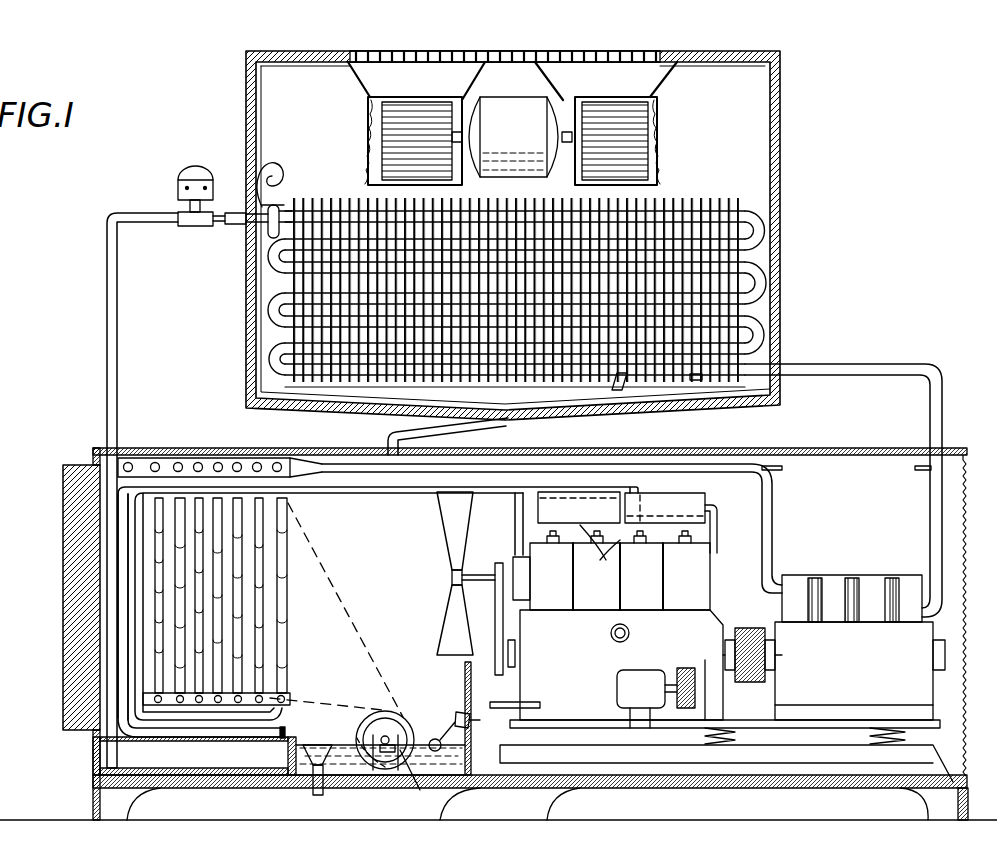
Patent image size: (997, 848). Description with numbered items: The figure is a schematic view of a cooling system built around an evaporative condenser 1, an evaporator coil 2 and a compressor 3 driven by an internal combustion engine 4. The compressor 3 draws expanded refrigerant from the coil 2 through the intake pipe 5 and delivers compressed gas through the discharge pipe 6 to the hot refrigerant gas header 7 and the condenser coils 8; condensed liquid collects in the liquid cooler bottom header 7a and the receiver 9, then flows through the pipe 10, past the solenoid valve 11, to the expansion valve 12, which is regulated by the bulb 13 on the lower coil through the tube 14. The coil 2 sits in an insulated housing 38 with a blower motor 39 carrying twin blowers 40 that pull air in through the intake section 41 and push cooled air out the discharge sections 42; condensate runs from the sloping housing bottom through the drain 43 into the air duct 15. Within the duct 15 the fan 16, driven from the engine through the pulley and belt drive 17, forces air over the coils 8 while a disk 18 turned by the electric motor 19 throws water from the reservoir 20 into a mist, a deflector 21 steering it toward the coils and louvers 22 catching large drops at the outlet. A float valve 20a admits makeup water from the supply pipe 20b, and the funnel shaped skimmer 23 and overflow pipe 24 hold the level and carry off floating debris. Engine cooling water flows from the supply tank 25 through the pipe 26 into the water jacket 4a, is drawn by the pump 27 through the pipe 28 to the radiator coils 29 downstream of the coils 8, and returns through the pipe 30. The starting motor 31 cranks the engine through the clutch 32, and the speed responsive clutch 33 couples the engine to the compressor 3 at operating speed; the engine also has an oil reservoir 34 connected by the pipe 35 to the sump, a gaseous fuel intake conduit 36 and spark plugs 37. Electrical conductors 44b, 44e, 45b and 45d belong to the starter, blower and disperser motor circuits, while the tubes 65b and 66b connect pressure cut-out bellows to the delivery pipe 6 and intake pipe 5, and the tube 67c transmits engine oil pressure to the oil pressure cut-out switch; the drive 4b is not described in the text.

The evaporative condenser 1 is at (300, 430).
The evaporator coil 2 is at (260, 346).
The compressor 3 is at (949, 700).
The internal combustion engine 4 is at (708, 618).
The water jacket 4a is at (655, 585).
The fan belt drive 4b is at (470, 650).
The intake pipe 5 is at (942, 432).
The discharge pipe 6 is at (748, 462).
The hot refrigerant gas header 7 is at (243, 458).
The liquid cooler bottom header 7a is at (143, 732).
The condenser coils 8 is at (283, 600).
The liquid refrigerant receiver 9 is at (232, 768).
The pipe 10 is at (107, 330).
The solenoid valve 11 is at (194, 166).
The expansion valve 12 is at (276, 204).
The gas container or bulb 13 is at (697, 383).
The tube 14 is at (580, 388).
The air duct 15 is at (160, 446).
The fan or blower 16 is at (450, 540).
The pulley and belt drive mechanism 17 is at (494, 608).
The rotatable disk 18 is at (375, 710).
The electric motor 19 is at (393, 716).
The pan or reservoir 20 is at (470, 757).
The float controlled valve 20a is at (472, 710).
The supply pipe 20b is at (471, 722).
The deflector 21 is at (435, 738).
The baffles or louvers 22 is at (63, 515).
The funnel shaped skimmer 23 is at (292, 775).
The overflow pipe 24 is at (324, 792).
The supply tank 25 is at (706, 499).
The pipe 26 is at (720, 518).
The pump 27 is at (513, 560).
The pipe 28 is at (515, 510).
The radiator coils 29 is at (128, 590).
The pipe 30 is at (358, 480).
The electrical starting motor 31 is at (618, 663).
The clutch 32 is at (688, 660).
The speed responsive clutch 33 is at (772, 618).
The oil reservoir 34 is at (605, 505).
The pipe 35 is at (578, 537).
The gaseous fuel intake conduit 36 is at (610, 636).
The spark plugs 37 is at (600, 562).
The insulated housing 38 is at (781, 195).
The electrical blower motor 39 is at (515, 118).
The twin fans or blowers 40 is at (383, 110).
The air intake section 41 is at (510, 47).
The cooled air discharge sections 42 is at (386, 41).
The condensate drain 43 is at (500, 424).
The conductor 44b is at (648, 730).
The branch conductor 44e is at (418, 783).
The conductor 45b is at (620, 700).
The conductor 45d is at (356, 738).
The tube 65b is at (782, 470).
The tube 66b is at (915, 470).
The tube 67c is at (532, 705).